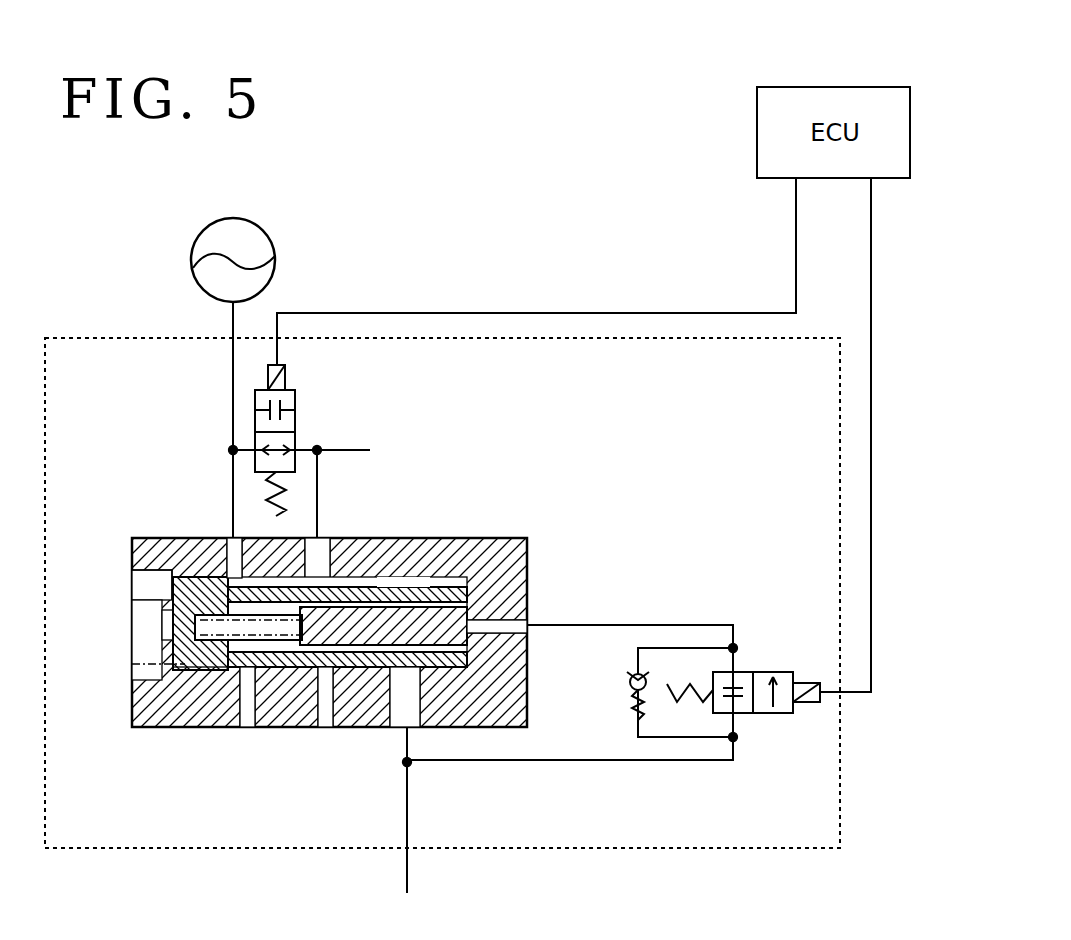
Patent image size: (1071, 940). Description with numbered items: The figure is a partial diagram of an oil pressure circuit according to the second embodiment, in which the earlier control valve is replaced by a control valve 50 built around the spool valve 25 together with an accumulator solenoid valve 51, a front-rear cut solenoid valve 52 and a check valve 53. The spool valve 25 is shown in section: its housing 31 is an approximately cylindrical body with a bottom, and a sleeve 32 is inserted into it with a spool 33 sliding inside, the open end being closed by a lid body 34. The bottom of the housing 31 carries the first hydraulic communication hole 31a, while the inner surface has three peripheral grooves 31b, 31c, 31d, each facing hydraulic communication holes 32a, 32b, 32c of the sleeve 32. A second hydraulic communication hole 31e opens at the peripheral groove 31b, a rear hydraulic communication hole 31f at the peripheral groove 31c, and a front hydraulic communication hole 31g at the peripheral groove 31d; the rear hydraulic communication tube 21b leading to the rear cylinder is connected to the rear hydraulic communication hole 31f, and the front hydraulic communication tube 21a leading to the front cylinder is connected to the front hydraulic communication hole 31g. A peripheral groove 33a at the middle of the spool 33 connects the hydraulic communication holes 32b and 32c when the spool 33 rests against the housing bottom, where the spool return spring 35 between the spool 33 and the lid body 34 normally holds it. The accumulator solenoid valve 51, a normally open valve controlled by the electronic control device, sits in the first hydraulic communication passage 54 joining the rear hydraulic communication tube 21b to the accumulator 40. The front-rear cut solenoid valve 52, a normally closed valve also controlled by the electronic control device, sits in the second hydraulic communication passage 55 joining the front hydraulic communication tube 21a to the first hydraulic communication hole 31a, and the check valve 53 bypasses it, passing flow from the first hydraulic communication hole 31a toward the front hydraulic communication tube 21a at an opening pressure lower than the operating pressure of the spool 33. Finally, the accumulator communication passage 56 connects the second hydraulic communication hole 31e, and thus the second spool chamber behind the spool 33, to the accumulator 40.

The spool valve 25 is at (557, 528).
The housing 31 is at (523, 720).
The first hydraulic communication hole 31a is at (523, 627).
The peripheral groove 31b is at (252, 727).
The peripheral groove 31c is at (320, 730).
The peripheral groove 31d is at (453, 727).
The second hydraulic communication hole 31e is at (209, 540).
The rear hydraulic communication hole 31f is at (335, 514).
The front hydraulic communication hole 31g is at (400, 730).
The sleeve 32 is at (298, 730).
The hydraulic communication hole 32a is at (217, 730).
The hydraulic communication hole 32b is at (323, 548).
The hydraulic communication hole 32c is at (368, 730).
The spool 33 is at (482, 538).
The peripheral groove 33a is at (428, 540).
The lid body 34 is at (160, 542).
The spool return spring 35 is at (132, 664).
The accumulator 40 is at (275, 240).
The control valve 50 is at (90, 337).
The accumulator solenoid valve 51 is at (298, 398).
The front-rear cut solenoid valve 52 is at (783, 672).
The check valve 53 is at (628, 675).
The first hydraulic communication passage 54 is at (300, 448).
The second hydraulic communication passage 55 is at (683, 623).
The accumulator communication passage 56 is at (233, 478).
The front hydraulic communication tube 21a is at (410, 873).
The rear hydraulic communication tube 21b is at (345, 450).